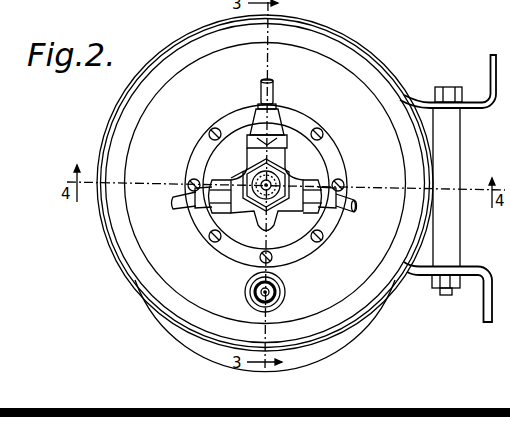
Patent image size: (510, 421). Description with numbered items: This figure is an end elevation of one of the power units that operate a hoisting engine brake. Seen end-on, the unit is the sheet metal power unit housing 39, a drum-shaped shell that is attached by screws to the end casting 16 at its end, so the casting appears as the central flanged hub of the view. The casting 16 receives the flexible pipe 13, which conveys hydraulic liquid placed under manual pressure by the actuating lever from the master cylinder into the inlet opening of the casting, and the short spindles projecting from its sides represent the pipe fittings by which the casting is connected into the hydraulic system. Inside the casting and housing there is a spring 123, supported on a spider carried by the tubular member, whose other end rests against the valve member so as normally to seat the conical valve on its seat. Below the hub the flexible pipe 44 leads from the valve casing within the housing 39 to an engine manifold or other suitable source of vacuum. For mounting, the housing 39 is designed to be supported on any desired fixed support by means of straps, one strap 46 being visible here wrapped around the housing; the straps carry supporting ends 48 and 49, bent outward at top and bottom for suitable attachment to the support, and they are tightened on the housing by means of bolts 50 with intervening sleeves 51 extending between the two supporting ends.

The flexible pipe 13 is at (290, 168).
The end casting 16 is at (330, 221).
The power unit housing 39 is at (353, 42).
The flexible pipe 44 is at (285, 287).
The strap 46 is at (126, 268).
The supporting end 48 is at (488, 73).
The supporting end 49 is at (478, 312).
The bolt 50 is at (443, 295).
The sleeve 51 is at (452, 162).
The spring 123 is at (273, 90).